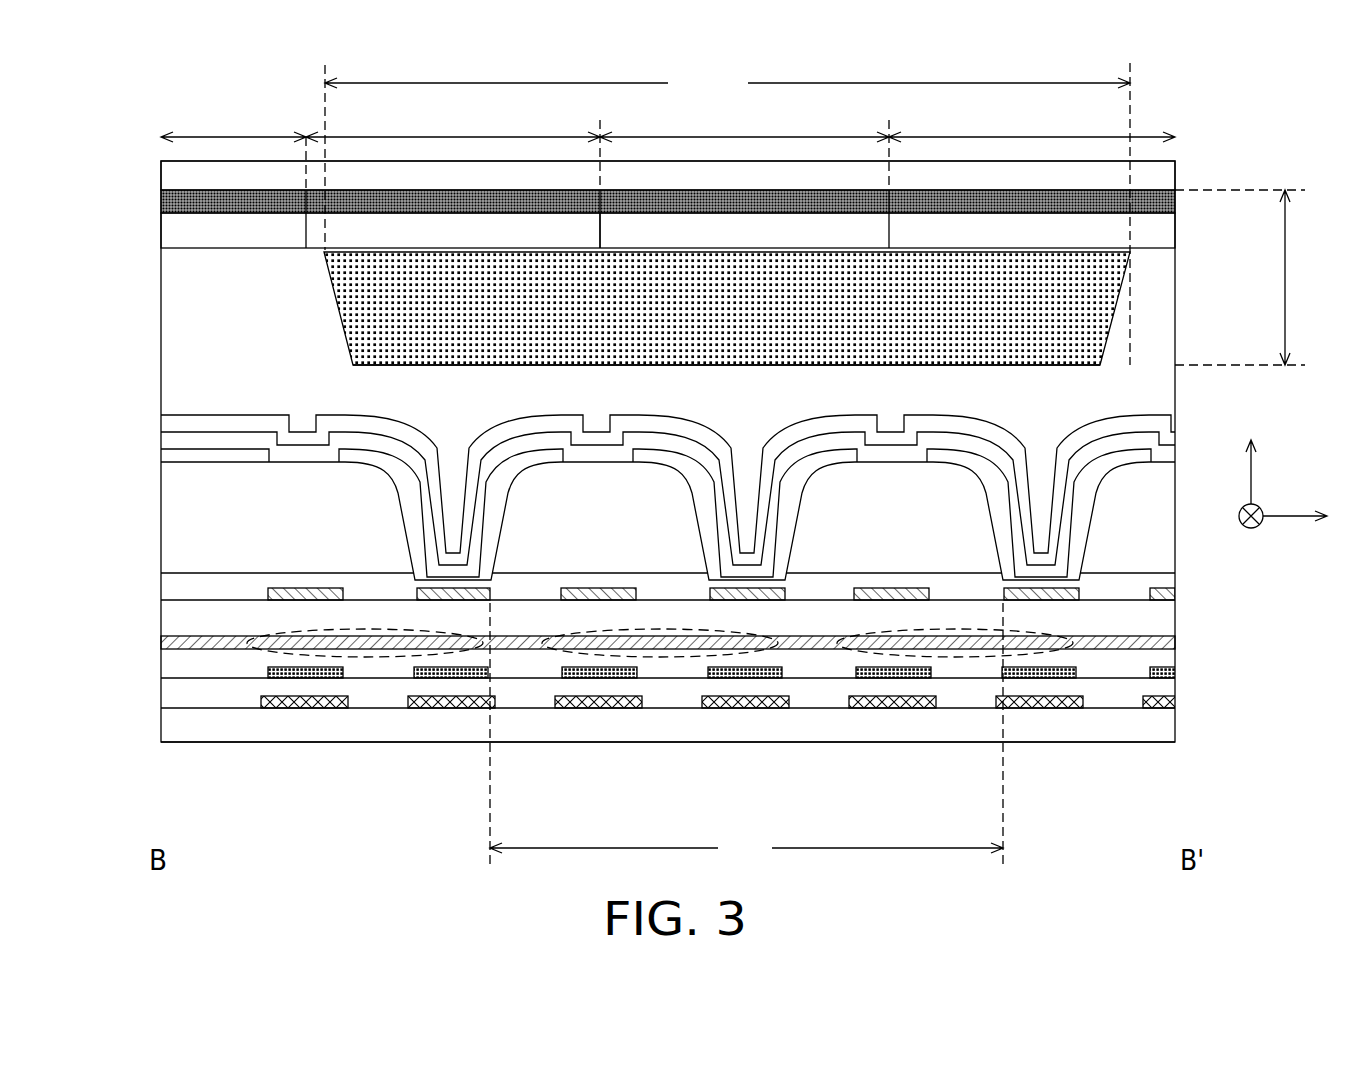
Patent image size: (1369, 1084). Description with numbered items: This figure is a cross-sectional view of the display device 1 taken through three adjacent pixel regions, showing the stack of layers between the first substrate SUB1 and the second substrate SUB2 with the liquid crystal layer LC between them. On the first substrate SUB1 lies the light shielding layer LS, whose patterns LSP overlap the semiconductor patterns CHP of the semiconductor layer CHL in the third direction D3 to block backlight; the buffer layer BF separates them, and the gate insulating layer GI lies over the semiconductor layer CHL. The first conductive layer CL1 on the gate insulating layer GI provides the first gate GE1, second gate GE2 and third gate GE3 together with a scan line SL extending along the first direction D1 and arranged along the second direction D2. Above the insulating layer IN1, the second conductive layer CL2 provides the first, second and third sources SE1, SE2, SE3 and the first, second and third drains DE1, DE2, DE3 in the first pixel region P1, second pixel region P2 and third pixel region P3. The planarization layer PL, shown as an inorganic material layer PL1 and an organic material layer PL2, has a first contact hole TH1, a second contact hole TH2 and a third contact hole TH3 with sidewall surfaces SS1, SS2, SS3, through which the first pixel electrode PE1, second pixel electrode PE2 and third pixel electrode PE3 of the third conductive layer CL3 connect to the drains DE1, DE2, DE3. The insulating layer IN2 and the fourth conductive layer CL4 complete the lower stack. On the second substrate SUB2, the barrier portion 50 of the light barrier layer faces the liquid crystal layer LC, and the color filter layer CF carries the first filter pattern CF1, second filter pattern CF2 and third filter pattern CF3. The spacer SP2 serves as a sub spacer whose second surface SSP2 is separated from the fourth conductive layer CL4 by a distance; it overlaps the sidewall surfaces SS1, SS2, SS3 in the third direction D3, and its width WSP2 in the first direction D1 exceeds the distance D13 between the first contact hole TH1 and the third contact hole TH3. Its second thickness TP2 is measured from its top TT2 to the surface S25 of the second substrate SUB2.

The second substrate SUB2 is at (161, 176).
The barrier portion 50 is at (161, 200).
The color filter layer CF is at (149, 225).
The first filter pattern CF1 is at (322, 237).
The second filter pattern CF2 is at (627, 238).
The third filter pattern CF3 is at (161, 240).
The liquid crystal layer LC is at (176, 337).
The fourth conductive layer CL4 is at (148, 405).
The insulating layer IN2 is at (161, 432).
The third conductive layer CL3 is at (147, 462).
The planarization layer PL is at (78, 488).
The organic material layer PL2 is at (175, 502).
The inorganic material layer PL1 is at (187, 577).
The second conductive layer CL2 is at (253, 598).
The insulating layer IN1 is at (175, 615).
The first conductive layer CL1 is at (147, 647).
The gate insulating layer GI is at (172, 655).
The semiconductor layer CHL is at (255, 674).
The buffer layer BF is at (239, 705).
The light shielding layer LS is at (225, 708).
The first substrate SUB1 is at (187, 733).
The surface of the second substrate S25 is at (1095, 178).
The top of the sub spacer TT2 is at (917, 352).
The spacer SP2 is at (1100, 290).
The second surface SSP2 is at (1047, 365).
The second thickness TP2 is at (1252, 277).
The width of the spacer WSP2 is at (727, 90).
The first pixel region P1 is at (453, 123).
The second pixel region P2 is at (744, 123).
The third pixel region P3 is at (668, 123).
The first contact hole TH1 is at (407, 541).
The second contact hole TH2 is at (703, 541).
The third contact hole TH3 is at (997, 541).
The sidewall surfaces of the first contact hole SS1 is at (497, 541).
The sidewall surfaces of the second contact hole SS2 is at (790, 541).
The sidewall surfaces of the third contact hole SS3 is at (1085, 541).
The first source SE1 is at (280, 602).
The second source SE2 is at (560, 602).
The third source SE3 is at (860, 602).
The first gate GE1 is at (373, 657).
The second gate GE2 is at (672, 657).
The third gate GE3 is at (967, 657).
The first drain DE1 is at (448, 602).
The second drain DE2 is at (777, 602).
The third drain DE3 is at (1072, 580).
The first pixel electrode PE1 is at (487, 583).
The second pixel electrode PE2 is at (773, 583).
The third pixel electrode PE3 is at (1062, 579).
The scan line SL is at (1173, 640).
The semiconductor pattern CHP is at (1168, 668).
The pattern LSP is at (1168, 700).
The first direction D1 is at (1316, 515).
The second direction D2 is at (1248, 538).
The third direction D3 is at (1251, 453).
The distance D13 is at (746, 735).
The display device 1 is at (1257, 816).